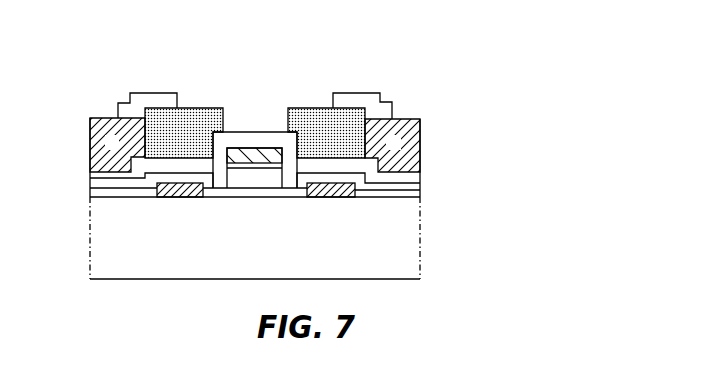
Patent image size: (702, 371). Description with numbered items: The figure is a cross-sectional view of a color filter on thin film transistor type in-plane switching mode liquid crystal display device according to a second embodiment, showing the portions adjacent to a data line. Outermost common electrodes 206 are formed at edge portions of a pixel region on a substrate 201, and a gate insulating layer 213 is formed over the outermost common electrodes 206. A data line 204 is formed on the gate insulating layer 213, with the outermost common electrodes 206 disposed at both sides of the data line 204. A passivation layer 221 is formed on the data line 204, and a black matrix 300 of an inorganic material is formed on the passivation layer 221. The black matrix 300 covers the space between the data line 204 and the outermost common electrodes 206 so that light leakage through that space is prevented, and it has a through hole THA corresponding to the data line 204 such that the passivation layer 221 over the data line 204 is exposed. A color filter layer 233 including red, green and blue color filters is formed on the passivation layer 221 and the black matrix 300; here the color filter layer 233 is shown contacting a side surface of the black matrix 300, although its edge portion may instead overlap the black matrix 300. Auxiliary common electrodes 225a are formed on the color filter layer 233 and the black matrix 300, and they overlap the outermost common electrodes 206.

The substrate 201 is at (410, 272).
The gate insulating layer 213 is at (408, 193).
The passivation layer 221 is at (408, 180).
The outermost common electrodes 206 is at (178, 197).
The data line 204 is at (252, 168).
The black matrix 300 is at (305, 120).
The auxiliary common electrodes 225a is at (155, 98).
The color filter layer 233 is at (408, 143).
The through hole THA is at (253, 116).